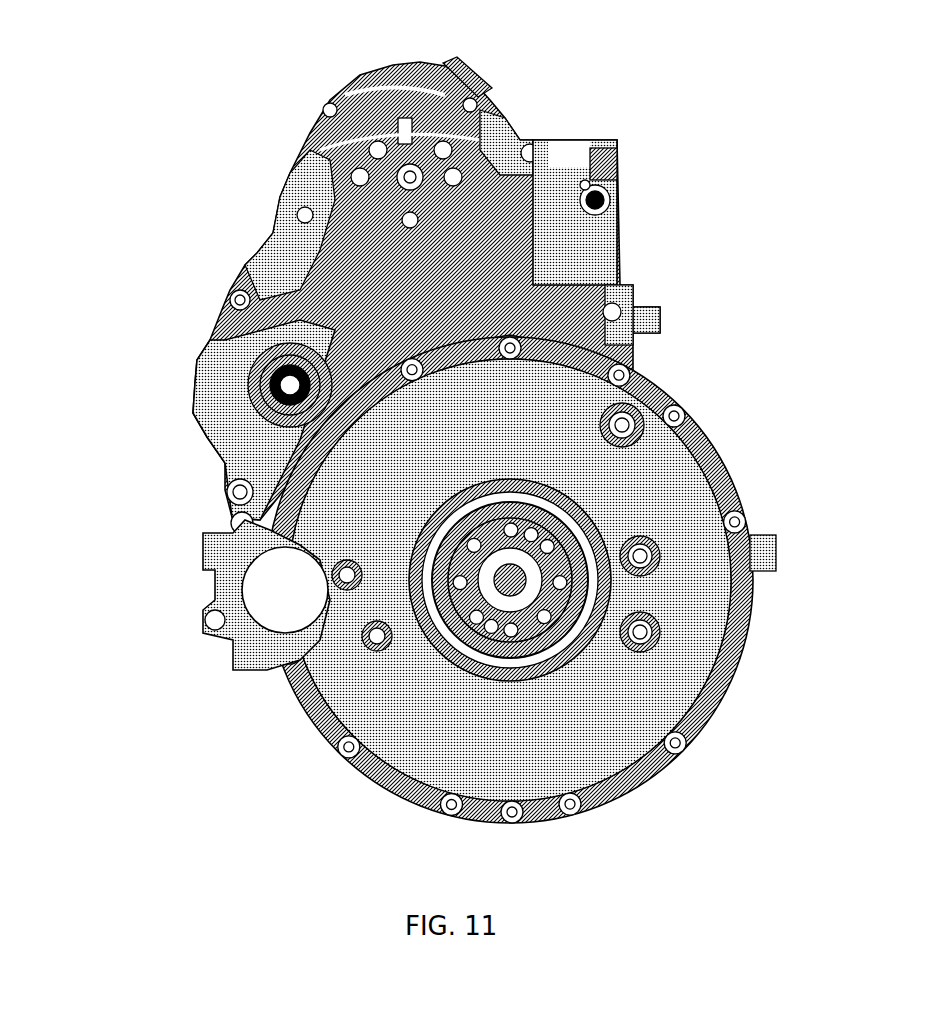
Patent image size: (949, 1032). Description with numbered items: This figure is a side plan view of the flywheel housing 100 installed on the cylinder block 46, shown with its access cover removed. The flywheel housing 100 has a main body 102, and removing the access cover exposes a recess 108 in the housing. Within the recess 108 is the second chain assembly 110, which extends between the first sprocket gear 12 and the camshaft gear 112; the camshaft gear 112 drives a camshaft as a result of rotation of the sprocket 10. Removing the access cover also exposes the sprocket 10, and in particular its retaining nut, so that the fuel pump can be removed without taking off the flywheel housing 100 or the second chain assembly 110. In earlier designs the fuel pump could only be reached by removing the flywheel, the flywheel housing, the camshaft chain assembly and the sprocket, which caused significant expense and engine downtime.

The flywheel housing 100 is at (818, 356).
The main body 102 is at (198, 588).
The sprocket 10 is at (240, 380).
The first sprocket gear 12 is at (238, 300).
The cylinder block 46 is at (625, 180).
The recess 108 is at (322, 132).
The second chain assembly 110 is at (273, 233).
The camshaft gear 112 is at (503, 115).